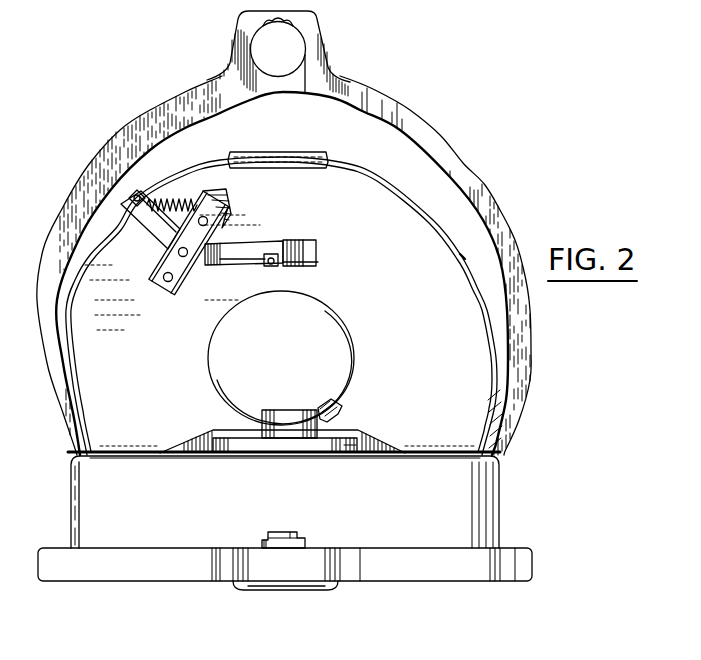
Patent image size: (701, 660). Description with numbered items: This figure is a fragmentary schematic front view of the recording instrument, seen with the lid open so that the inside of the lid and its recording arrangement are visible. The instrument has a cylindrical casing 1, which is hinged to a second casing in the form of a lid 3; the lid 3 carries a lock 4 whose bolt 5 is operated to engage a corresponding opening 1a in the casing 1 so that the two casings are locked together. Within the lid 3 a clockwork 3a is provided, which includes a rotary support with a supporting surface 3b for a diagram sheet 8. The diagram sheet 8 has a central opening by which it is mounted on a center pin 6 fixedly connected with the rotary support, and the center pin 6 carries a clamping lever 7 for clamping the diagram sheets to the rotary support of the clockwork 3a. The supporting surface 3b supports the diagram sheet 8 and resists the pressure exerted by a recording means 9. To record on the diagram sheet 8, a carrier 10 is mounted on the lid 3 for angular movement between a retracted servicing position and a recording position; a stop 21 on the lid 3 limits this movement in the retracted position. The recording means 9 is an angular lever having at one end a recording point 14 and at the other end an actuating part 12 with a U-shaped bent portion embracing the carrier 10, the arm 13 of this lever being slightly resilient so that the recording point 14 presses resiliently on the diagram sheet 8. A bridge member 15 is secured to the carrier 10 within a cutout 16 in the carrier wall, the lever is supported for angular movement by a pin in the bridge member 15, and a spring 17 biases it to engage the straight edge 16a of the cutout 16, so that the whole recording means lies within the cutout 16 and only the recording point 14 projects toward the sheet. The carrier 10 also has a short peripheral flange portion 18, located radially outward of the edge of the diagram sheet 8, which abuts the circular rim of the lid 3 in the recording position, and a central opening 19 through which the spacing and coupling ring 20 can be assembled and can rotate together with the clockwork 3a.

The cylindrical casing 1 is at (390, 103).
The opening 1a is at (293, 42).
The lid 3 is at (69, 484).
The clockwork 3a is at (70, 518).
The supporting surface 3b is at (165, 458).
The lock 4 is at (290, 592).
The bolt 5 is at (285, 531).
The center pin 6 is at (305, 410).
The clamping lever 7 is at (338, 412).
The diagram sheet 8 is at (378, 456).
The recording means 9 is at (225, 266).
The carrier 10 is at (460, 366).
The actuating part 12 is at (142, 182).
The arm 13 is at (250, 252).
The recording point 14 is at (272, 262).
The bridge member 15 is at (172, 289).
The cutout 16 is at (304, 245).
The straight edge 16a is at (311, 265).
The spring 17 is at (176, 199).
The peripheral flange portion 18 is at (291, 151).
The central opening 19 is at (209, 358).
The spacing ring 20 is at (358, 444).
The stop 21 is at (240, 437).